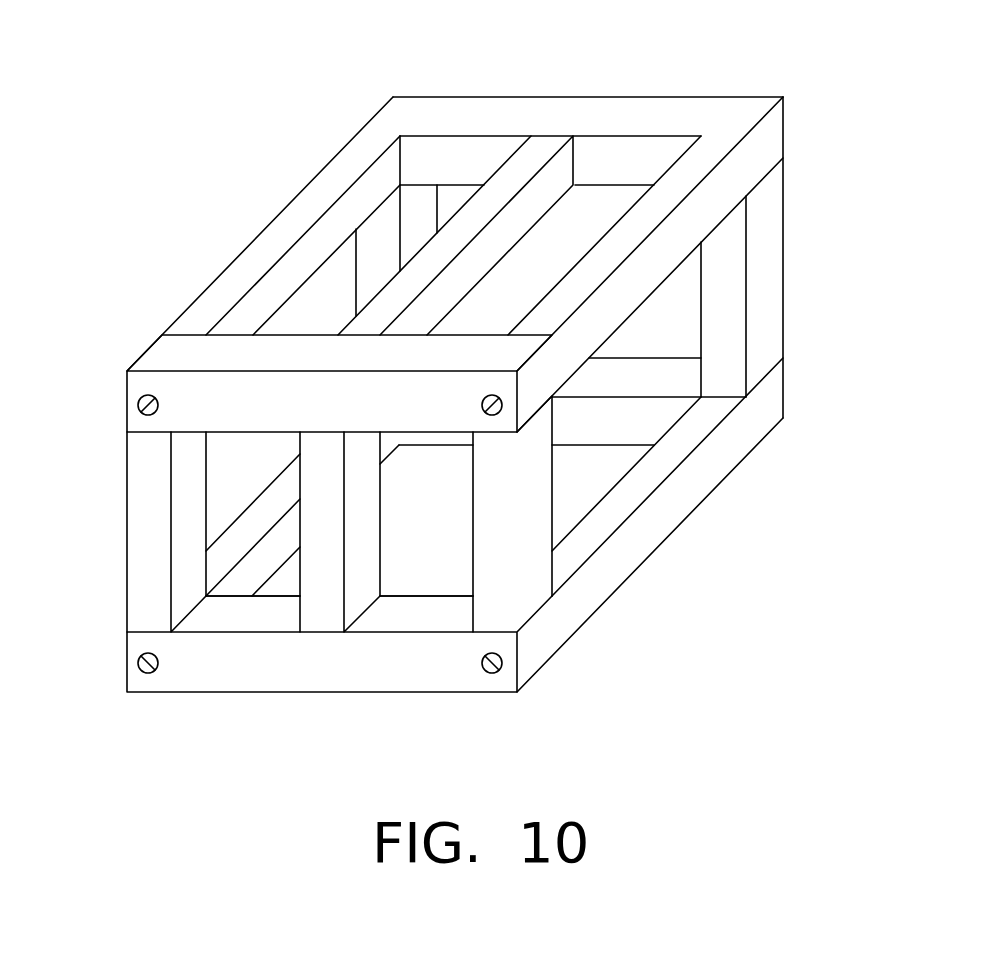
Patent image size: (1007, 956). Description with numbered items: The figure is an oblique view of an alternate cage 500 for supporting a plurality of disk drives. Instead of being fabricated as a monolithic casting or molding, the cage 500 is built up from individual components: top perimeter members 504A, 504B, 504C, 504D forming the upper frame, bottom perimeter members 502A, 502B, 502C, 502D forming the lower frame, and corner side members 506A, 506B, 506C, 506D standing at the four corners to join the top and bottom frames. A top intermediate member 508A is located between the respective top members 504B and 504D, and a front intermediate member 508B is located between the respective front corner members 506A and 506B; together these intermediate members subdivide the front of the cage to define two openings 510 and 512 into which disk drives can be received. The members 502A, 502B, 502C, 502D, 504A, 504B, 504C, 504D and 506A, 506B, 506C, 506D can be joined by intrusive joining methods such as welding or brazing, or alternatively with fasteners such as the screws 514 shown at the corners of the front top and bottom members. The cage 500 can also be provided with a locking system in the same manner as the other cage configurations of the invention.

The cage 500 is at (912, 60).
The bottom perimeter member 502A is at (306, 691).
The bottom perimeter member 502B is at (258, 522).
The bottom perimeter member 502C is at (663, 364).
The bottom perimeter member 502D is at (668, 530).
The top perimeter member 504A is at (147, 360).
The top perimeter member 504B is at (270, 223).
The top perimeter member 504C is at (498, 97).
The top perimeter member 504D is at (757, 150).
The corner side member 506A is at (147, 531).
The corner side member 506B is at (487, 512).
The corner side member 506C is at (440, 202).
The corner side member 506D is at (776, 265).
The top intermediate member 508A is at (558, 164).
The front intermediate member 508B is at (368, 560).
The opening 510 is at (235, 607).
The opening 512 is at (403, 607).
The screw 514 is at (158, 407).